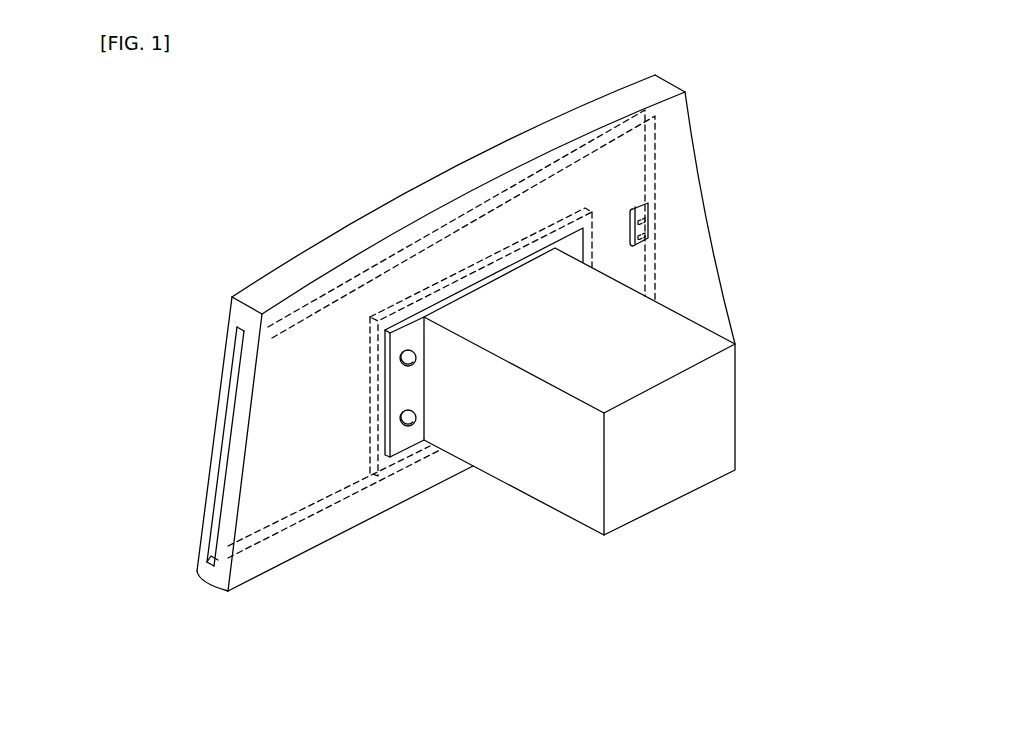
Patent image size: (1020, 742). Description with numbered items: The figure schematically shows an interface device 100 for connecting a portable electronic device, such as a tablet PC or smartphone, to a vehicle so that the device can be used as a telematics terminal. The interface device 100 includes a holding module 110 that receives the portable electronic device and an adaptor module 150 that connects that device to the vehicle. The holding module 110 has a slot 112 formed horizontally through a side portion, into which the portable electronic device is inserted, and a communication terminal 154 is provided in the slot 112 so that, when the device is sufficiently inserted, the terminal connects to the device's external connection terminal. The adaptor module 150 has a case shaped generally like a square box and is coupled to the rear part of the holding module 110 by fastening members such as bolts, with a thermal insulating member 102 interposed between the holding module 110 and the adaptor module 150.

The interface device 100 is at (417, 160).
The holding module 110 is at (270, 607).
The slot 112 is at (223, 452).
The thermal insulating member 102 is at (384, 462).
The adaptor module 150 is at (520, 465).
The communication terminal 154 is at (648, 223).